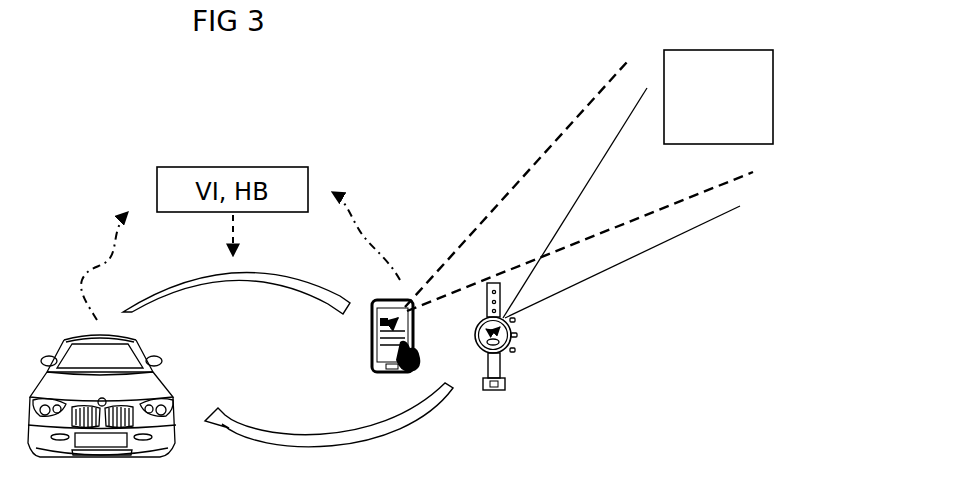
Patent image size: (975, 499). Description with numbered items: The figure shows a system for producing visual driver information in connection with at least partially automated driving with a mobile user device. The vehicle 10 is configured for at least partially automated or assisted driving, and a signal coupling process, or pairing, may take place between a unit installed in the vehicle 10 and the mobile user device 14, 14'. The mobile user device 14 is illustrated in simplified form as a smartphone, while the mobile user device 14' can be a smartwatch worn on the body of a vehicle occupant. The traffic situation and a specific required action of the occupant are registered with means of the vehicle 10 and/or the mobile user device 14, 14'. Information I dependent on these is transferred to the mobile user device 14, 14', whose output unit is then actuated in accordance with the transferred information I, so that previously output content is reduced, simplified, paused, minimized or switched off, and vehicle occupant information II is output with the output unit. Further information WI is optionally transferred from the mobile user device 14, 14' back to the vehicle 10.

The vehicle 10 is at (102, 396).
The mobile user device 14 is at (417, 336).
The mobile user device 14' is at (525, 336).
The information I is at (236, 295).
The further information WI is at (329, 415).
The vehicle occupant information II is at (735, 97).